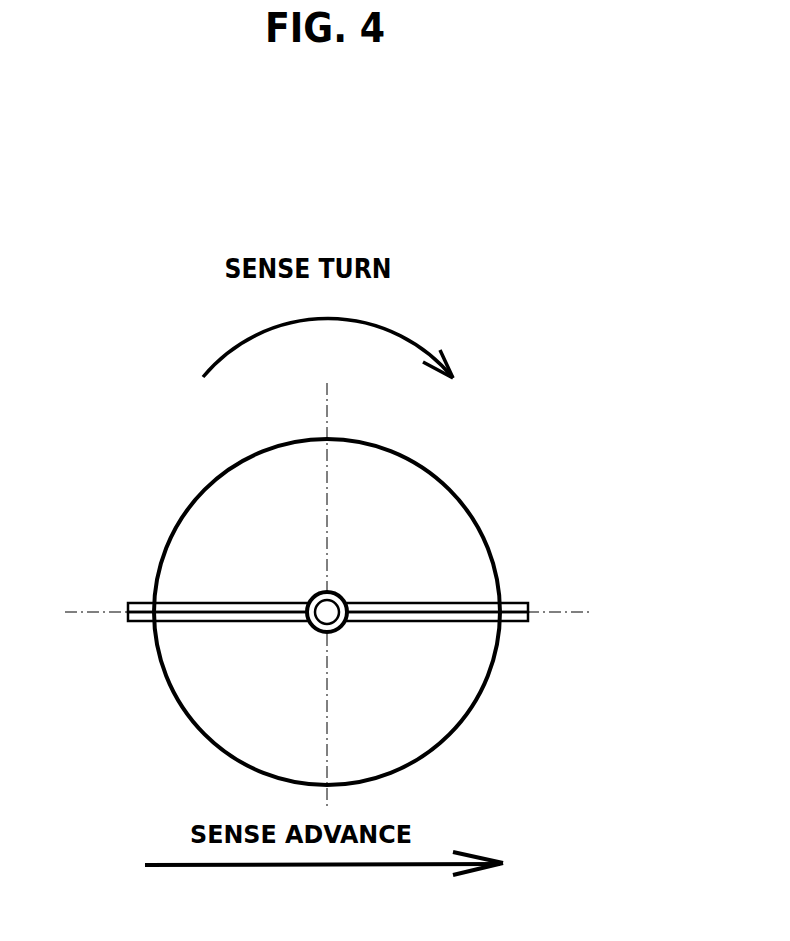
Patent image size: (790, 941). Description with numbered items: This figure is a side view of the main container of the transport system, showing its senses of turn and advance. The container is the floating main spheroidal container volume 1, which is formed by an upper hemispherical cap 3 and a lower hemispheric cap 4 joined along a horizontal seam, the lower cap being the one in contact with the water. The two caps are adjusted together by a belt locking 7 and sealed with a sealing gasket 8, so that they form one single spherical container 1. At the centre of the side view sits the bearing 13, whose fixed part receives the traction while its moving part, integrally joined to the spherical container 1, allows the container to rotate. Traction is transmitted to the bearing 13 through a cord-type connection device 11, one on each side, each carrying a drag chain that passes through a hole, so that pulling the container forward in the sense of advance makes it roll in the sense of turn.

The floating main spheroidal container volume 1 is at (455, 490).
The upper hemispherical cap 3 is at (233, 548).
The lower hemispheric cap 4 is at (260, 693).
The belt locking 7 is at (518, 602).
The sealing gasket 8 is at (441, 622).
The cord-type connection device 11 is at (309, 618).
The bearing 13 is at (346, 597).